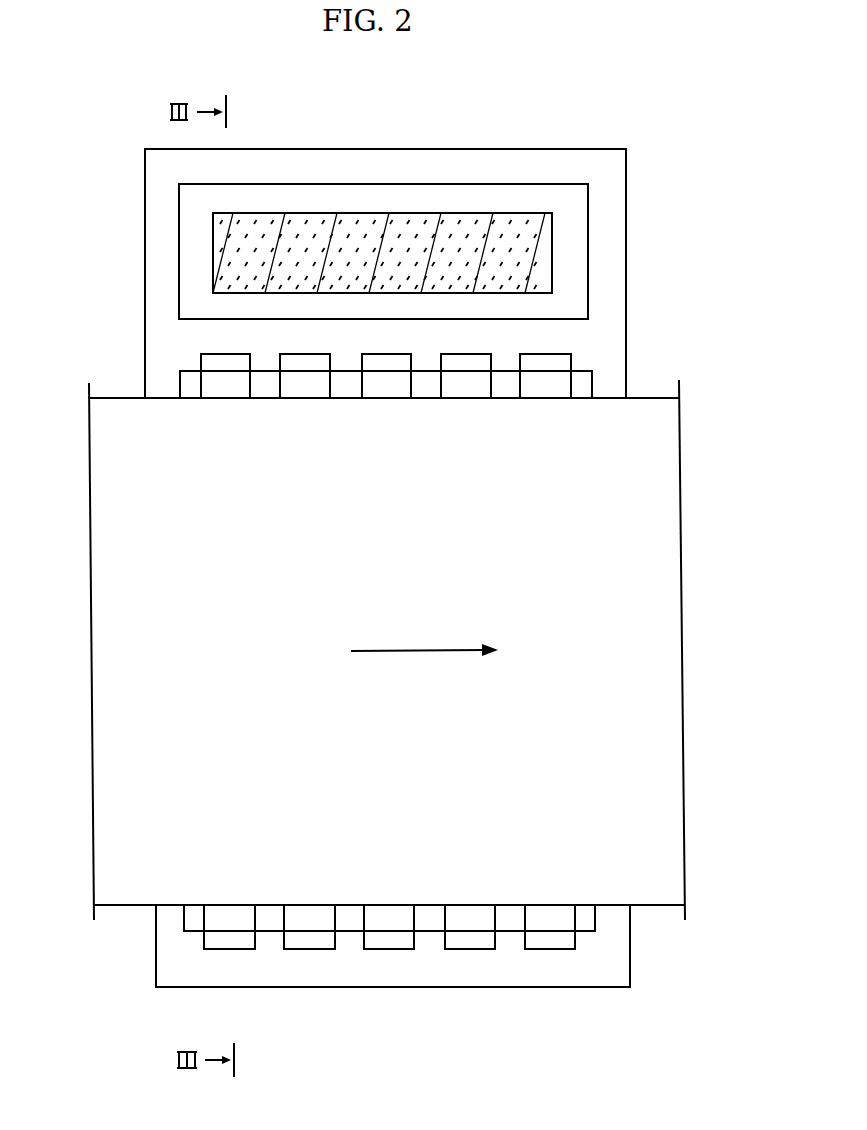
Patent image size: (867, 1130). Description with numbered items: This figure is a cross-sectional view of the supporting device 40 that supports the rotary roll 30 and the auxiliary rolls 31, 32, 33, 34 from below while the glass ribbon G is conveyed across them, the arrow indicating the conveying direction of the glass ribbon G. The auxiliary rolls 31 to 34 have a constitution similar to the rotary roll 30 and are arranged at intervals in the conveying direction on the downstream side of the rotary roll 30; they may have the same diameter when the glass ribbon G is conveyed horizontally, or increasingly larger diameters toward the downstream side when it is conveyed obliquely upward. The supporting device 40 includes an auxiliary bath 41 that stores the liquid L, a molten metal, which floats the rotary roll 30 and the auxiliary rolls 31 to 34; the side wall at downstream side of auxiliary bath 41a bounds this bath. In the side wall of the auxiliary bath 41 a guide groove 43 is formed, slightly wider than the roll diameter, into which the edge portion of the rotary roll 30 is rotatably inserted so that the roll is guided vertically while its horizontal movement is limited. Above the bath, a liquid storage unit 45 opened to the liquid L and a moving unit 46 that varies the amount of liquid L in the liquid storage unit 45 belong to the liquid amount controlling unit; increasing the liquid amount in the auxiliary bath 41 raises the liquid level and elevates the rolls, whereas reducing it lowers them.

The supporting device 40 is at (113, 147).
The liquid storage unit 45 is at (407, 161).
The moving unit 46 is at (333, 231).
The liquid L is at (263, 383).
The guide groove 43 is at (197, 363).
The auxiliary bath 41 is at (173, 964).
The side wall at downstream side of auxiliary bath 41a is at (622, 925).
The rotary roll 30 is at (229, 950).
The auxiliary roll 31 is at (316, 950).
The auxiliary roll 32 is at (392, 950).
The auxiliary roll 33 is at (470, 950).
The auxiliary roll 34 is at (550, 950).
The glass ribbon G is at (100, 650).